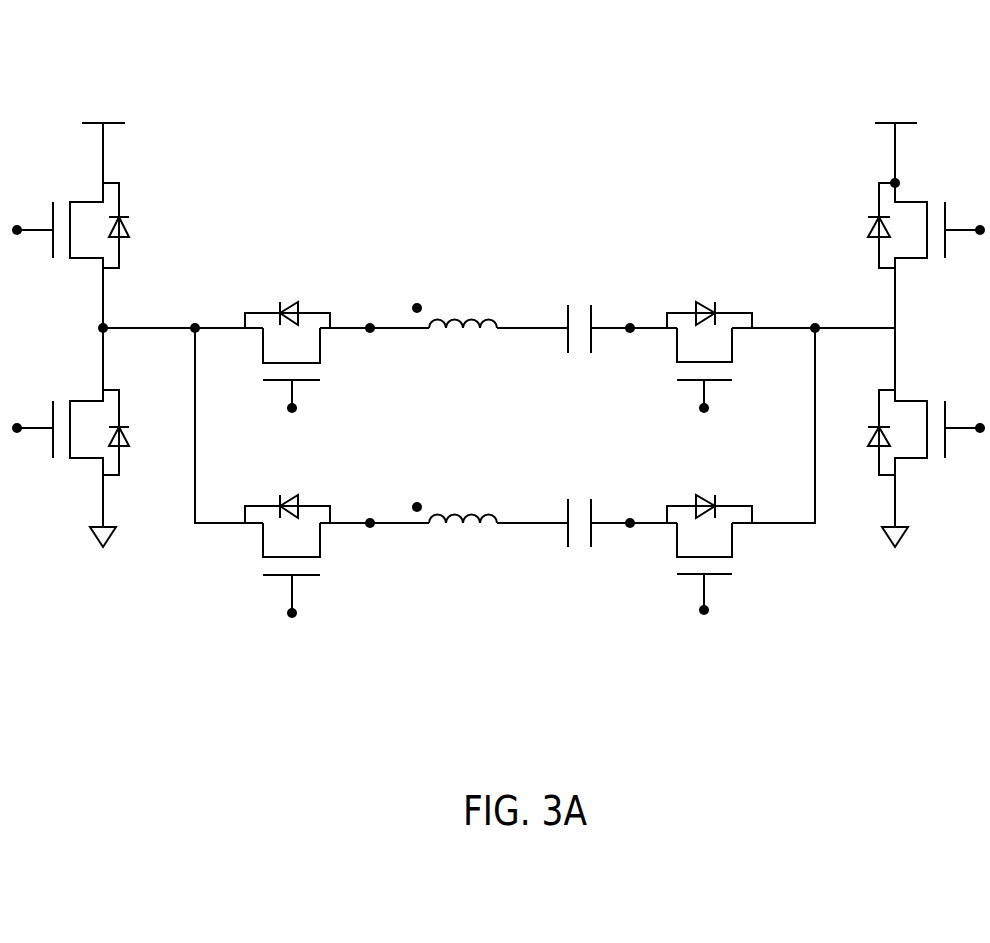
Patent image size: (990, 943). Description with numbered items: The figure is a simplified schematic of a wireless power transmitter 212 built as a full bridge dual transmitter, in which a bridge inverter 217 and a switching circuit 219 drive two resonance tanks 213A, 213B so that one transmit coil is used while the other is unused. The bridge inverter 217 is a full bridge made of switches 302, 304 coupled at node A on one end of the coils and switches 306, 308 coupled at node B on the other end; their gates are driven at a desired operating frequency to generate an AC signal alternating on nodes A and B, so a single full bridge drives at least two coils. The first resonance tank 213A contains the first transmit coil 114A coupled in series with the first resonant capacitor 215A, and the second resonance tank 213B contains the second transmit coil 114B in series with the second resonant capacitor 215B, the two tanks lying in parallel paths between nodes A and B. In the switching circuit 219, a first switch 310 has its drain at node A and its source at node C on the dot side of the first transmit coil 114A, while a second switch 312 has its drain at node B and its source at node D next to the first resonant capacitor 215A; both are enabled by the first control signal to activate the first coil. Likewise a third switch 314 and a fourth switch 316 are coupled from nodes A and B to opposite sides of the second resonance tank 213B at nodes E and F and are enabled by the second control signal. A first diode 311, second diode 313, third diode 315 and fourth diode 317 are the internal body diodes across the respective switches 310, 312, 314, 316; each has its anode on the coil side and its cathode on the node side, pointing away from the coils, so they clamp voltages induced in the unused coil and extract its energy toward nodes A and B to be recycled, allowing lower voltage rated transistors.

The power stage circuit 212 is at (585, 108).
The first resonance tank 213A is at (525, 210).
The second resonance tank 213B is at (505, 590).
The first resonant capacitor 215A is at (582, 298).
The second resonant capacitor 215B is at (581, 493).
The bridge inverter 217 is at (158, 258).
The switching circuit 219 is at (325, 270).
The switch 302 is at (80, 275).
The switch 304 is at (80, 484).
The switch 306 is at (915, 168).
The switch 308 is at (915, 480).
The first switch 310 is at (340, 363).
The first diode 311 is at (299, 308).
The second switch 312 is at (648, 348).
The second diode 313 is at (695, 308).
The third switch 314 is at (246, 550).
The third diode 315 is at (299, 503).
The fourth switch 316 is at (646, 550).
The fourth diode 317 is at (695, 503).
The first transmit coil 114A is at (490, 312).
The second transmit coil 114B is at (490, 505).